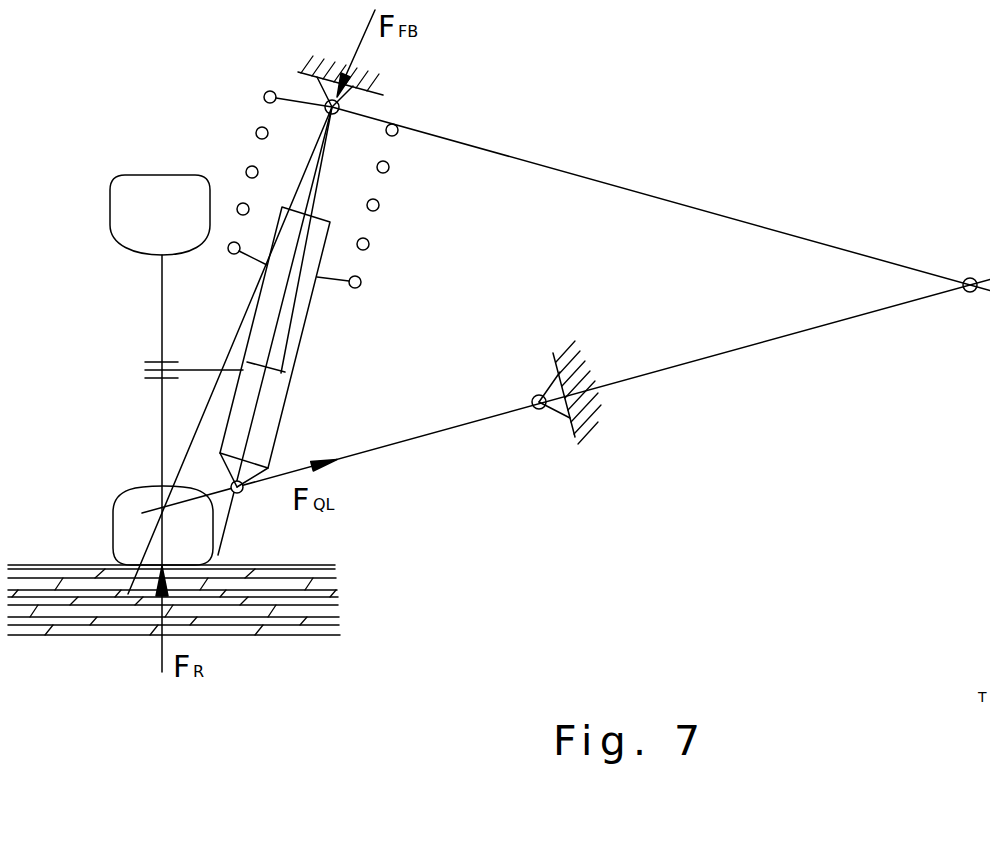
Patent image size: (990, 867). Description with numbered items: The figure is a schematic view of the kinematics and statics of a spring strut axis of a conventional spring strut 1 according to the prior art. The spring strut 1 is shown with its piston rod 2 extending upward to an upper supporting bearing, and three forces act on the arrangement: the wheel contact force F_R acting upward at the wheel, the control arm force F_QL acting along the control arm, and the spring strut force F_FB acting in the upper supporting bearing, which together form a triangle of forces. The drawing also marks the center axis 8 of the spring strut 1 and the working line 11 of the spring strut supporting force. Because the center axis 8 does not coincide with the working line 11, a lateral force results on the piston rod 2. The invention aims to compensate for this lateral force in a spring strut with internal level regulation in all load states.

The spring strut 1 is at (300, 335).
The piston rod 2 is at (317, 183).
The center axis 8 is at (280, 313).
The working line 11 is at (199, 425).